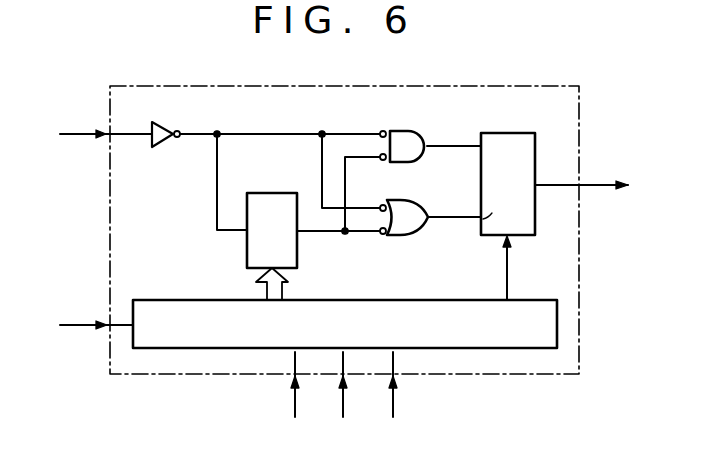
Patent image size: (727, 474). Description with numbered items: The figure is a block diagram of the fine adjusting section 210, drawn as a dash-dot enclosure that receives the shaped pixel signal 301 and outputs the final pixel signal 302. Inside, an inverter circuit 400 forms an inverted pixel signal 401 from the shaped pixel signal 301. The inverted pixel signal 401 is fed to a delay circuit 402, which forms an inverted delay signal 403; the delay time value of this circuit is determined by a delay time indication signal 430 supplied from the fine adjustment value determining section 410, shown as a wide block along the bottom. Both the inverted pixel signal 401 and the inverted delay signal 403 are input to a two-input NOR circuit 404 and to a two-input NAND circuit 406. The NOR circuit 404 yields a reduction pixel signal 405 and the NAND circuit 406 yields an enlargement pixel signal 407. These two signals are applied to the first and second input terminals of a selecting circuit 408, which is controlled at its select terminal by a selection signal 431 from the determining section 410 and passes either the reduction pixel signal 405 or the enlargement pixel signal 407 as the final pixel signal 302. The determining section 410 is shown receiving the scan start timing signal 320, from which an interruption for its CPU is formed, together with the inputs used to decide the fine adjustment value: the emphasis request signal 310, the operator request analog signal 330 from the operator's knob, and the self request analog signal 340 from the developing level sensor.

The fine adjusting section 210 is at (110, 218).
The shaped pixel signal 301 is at (85, 135).
The final pixel signal 302 is at (608, 186).
The emphasis request signal 310 is at (302, 400).
The scan start timing signal 320 is at (72, 326).
The operator request analog signal 330 is at (352, 400).
The self request analog signal 340 is at (403, 400).
The inverter circuit 400 is at (166, 126).
The inverted pixel signal 401 is at (291, 133).
The delay circuit 402 is at (271, 193).
The inverted delay signal 403 is at (331, 233).
The 2-input NOR circuit 404 is at (404, 130).
The reduction pixel signal 405 is at (451, 148).
The 2-input NAND circuit 406 is at (398, 200).
The enlargement pixel signal 407 is at (450, 219).
The selecting circuit 408 is at (494, 132).
The fine adjustment value determining section 410 is at (387, 300).
The delay time indication signal 430 is at (258, 293).
The selection signal 431 is at (509, 265).